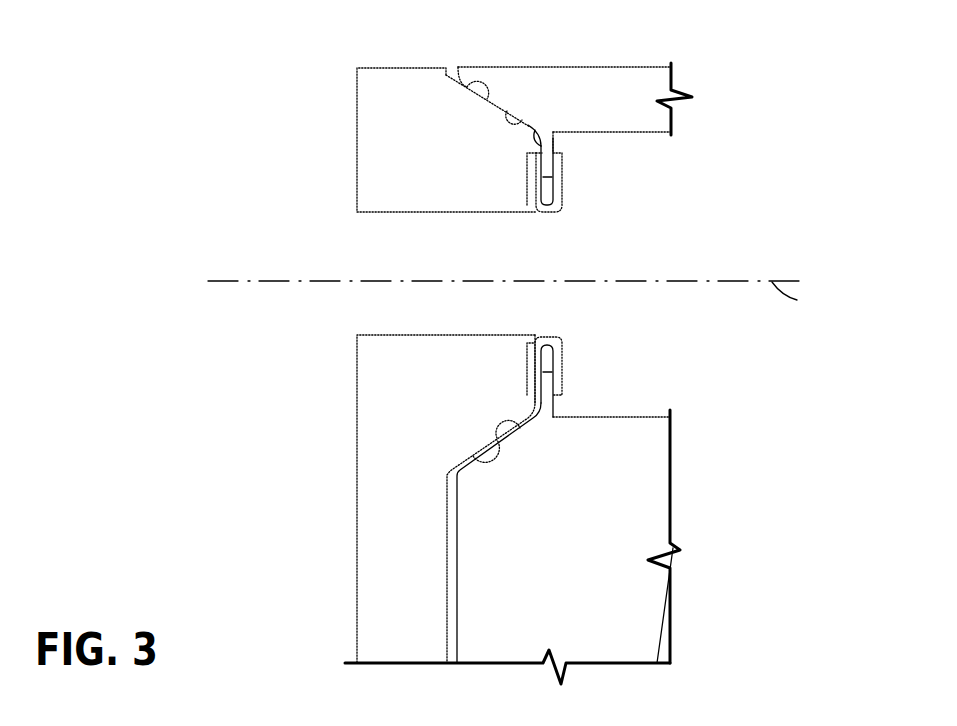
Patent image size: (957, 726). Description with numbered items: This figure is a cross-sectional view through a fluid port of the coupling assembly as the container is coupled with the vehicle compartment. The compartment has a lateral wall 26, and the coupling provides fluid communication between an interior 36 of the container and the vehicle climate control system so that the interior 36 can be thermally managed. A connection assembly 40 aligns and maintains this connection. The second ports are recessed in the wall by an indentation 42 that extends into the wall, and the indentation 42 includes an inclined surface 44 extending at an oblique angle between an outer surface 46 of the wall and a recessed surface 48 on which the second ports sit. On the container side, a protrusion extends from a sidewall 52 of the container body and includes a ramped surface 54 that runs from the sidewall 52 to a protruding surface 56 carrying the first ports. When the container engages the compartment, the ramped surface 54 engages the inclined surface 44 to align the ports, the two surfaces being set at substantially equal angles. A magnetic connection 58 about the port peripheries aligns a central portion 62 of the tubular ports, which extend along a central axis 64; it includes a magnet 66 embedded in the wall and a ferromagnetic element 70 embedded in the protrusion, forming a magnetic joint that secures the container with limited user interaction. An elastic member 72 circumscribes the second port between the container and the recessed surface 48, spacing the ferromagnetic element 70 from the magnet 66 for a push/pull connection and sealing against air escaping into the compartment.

The lateral wall 26 is at (577, 582).
The interior 36 is at (276, 383).
The connection assembly 40 is at (436, 60).
The indentation 42 is at (485, 118).
The inclined surface 44 is at (520, 125).
The outer surface 46 is at (457, 607).
The recessed surface 48 is at (533, 127).
The sidewall 52 is at (395, 518).
The ramped surface 54 is at (468, 83).
The protruding surface 56 is at (546, 388).
The magnetic connection 58 is at (541, 330).
The central portion 62 is at (399, 268).
The central axis 64 is at (797, 300).
The magnet 66 is at (547, 191).
The ferromagnetic element 70 is at (523, 365).
The elastic member 72 is at (557, 380).